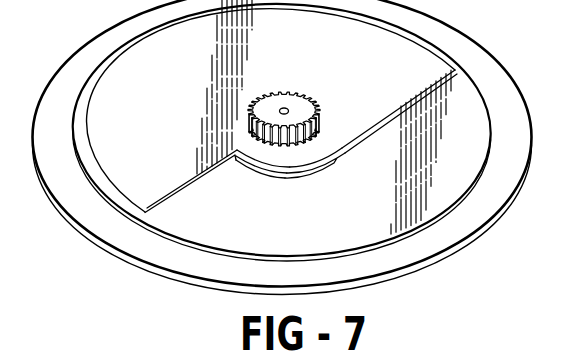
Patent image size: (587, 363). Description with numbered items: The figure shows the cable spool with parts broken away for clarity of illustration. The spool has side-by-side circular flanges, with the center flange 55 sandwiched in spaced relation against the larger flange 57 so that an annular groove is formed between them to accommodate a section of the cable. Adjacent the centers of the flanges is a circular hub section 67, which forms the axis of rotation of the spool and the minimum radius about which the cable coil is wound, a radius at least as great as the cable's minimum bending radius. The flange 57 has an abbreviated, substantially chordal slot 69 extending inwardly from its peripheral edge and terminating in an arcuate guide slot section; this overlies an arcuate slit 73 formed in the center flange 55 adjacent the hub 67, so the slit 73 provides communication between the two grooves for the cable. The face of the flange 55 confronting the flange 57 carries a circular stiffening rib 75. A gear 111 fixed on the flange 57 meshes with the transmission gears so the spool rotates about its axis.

The circular flange 55 is at (93, 40).
The circular flange 57 is at (193, 100).
The hub section 67 is at (337, 156).
The chordal slot 69 is at (387, 119).
The arcuate slit 73 is at (243, 165).
The circular stiffening rib 75 is at (478, 89).
The gear 111 is at (290, 99).